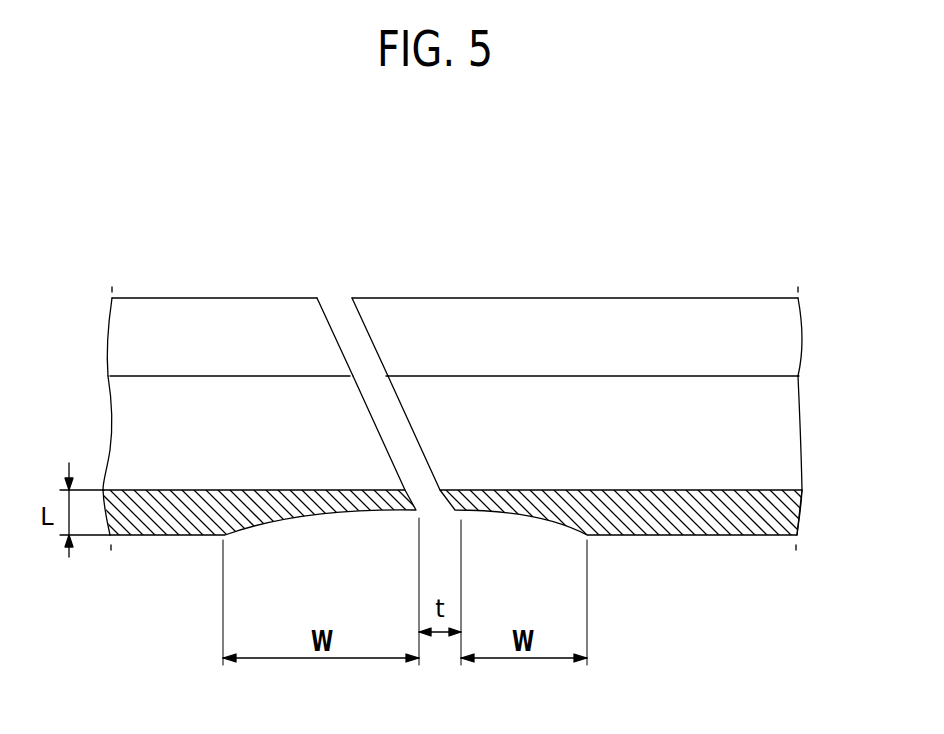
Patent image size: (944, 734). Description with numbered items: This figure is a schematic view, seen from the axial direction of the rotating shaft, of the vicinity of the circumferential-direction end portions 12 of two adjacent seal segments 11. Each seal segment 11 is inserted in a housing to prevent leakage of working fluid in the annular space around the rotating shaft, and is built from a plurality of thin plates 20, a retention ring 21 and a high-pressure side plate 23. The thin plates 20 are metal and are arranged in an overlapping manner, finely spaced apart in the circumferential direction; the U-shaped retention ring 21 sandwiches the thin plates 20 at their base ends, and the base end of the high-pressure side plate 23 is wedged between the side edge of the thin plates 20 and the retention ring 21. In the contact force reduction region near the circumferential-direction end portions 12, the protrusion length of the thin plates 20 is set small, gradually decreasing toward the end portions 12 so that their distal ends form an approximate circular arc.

The seal segment 11 is at (139, 297).
The circumferential-direction end portion 12 is at (363, 394).
The thin plates 20 is at (773, 518).
The retention ring 21 is at (265, 318).
The high-pressure side plate 23 is at (134, 428).